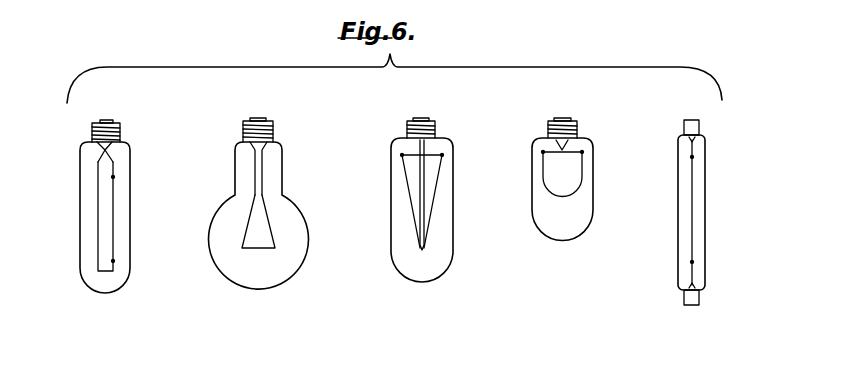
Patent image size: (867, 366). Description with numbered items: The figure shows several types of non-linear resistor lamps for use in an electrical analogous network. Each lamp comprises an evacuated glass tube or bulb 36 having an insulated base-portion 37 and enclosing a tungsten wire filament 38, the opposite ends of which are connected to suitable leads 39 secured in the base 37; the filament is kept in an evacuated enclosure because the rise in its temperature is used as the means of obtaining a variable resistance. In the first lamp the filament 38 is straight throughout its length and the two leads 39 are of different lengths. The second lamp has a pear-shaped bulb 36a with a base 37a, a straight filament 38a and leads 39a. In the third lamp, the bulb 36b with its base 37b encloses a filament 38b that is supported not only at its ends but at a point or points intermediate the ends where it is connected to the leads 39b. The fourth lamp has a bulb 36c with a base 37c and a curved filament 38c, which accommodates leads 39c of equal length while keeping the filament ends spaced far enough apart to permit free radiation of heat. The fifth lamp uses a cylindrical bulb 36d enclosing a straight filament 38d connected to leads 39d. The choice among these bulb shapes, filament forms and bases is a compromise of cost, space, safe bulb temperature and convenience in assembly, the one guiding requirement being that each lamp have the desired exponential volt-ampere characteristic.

The evacuated glass tube or bulb 36 is at (80, 207).
The insulated base-portion 37 is at (92, 128).
The filament 38 is at (113, 233).
The leads 39 is at (113, 172).
The pear-shaped bulb 36a is at (305, 258).
The base-portion 37a is at (268, 127).
The filament 38a is at (255, 248).
The leads 39a is at (258, 182).
The bulb 36b is at (453, 268).
The base-portion 37b is at (436, 126).
The filament 38b is at (427, 220).
The leads 39b is at (425, 150).
The bulb 36c is at (593, 220).
The base-portion 37c is at (579, 125).
The curved filament 38c is at (582, 180).
The leads 39c is at (575, 151).
The cylindrical bulb 36d is at (705, 240).
The filament 38d is at (693, 202).
The leads 39d is at (695, 280).